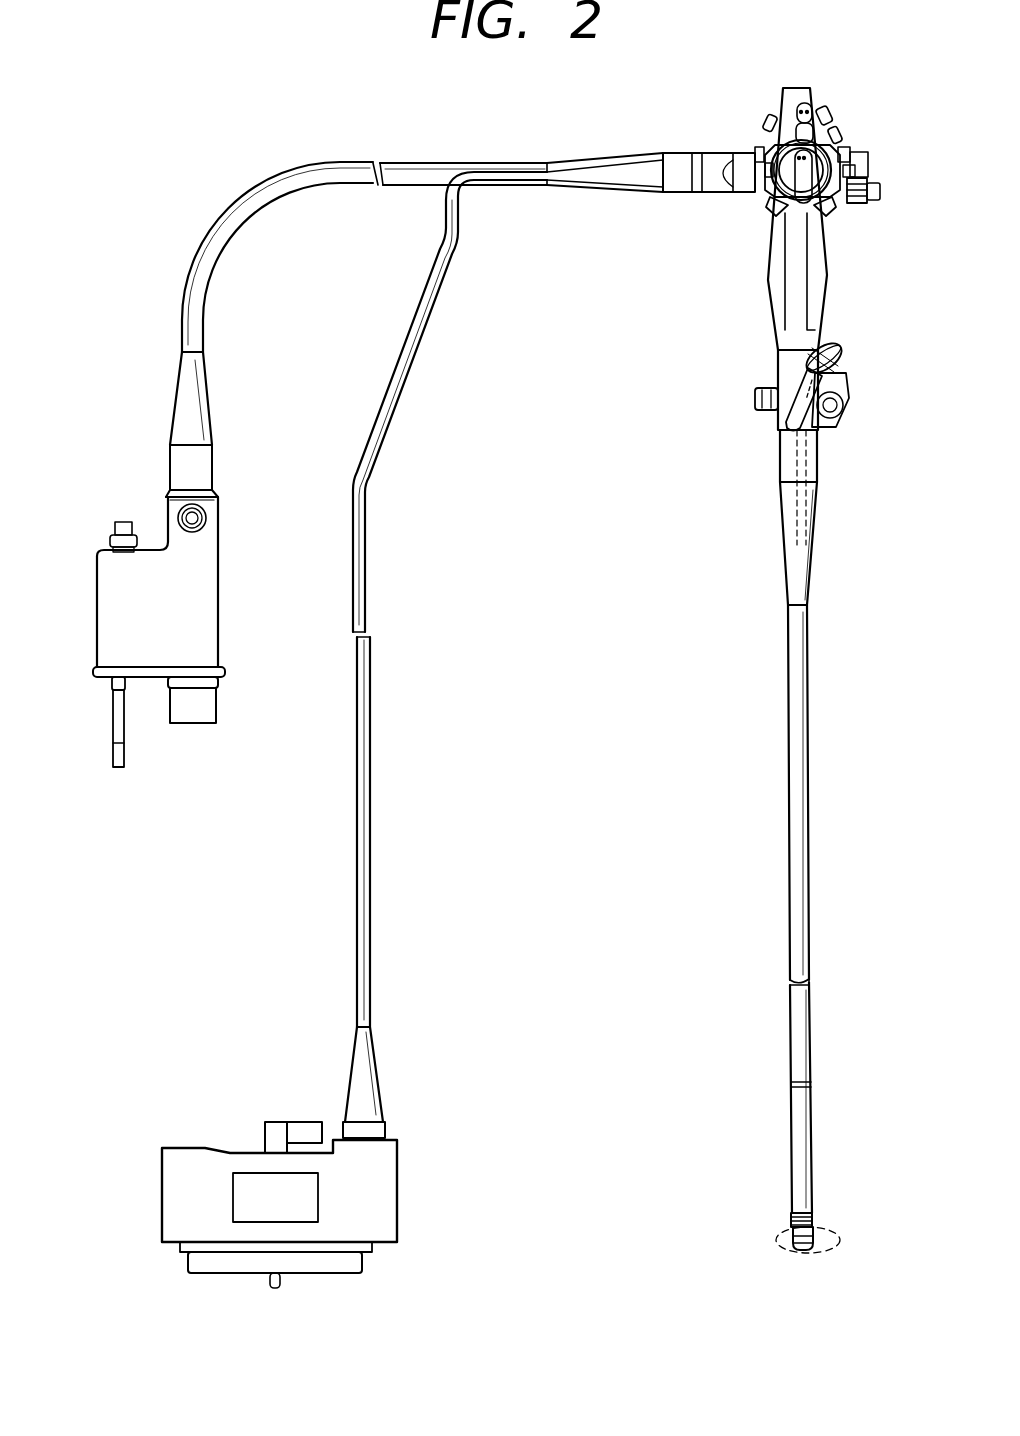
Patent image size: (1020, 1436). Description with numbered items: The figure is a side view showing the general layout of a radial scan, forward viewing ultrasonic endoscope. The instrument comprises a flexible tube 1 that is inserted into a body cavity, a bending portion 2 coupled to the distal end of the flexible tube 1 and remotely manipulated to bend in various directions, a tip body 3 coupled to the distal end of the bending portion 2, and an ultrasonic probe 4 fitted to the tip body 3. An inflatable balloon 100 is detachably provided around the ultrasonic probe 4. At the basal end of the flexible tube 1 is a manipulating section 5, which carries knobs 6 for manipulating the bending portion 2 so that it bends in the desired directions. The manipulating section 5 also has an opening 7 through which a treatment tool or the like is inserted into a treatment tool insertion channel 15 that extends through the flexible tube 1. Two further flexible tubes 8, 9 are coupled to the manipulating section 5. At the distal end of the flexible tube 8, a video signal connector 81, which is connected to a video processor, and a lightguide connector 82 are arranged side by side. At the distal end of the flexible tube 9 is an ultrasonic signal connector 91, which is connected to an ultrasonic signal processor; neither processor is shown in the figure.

The inflatable balloon 100 is at (776, 1243).
The flexible tube 1 is at (787, 781).
The bending portion 2 is at (790, 1133).
The tip body 3 is at (795, 1220).
The ultrasonic probe 4 is at (790, 1242).
The manipulating section 5 is at (777, 305).
The knobs 6 is at (818, 212).
The opening 7 is at (833, 345).
The treatment tool insertion channel 15 is at (785, 510).
The flexible tube 8 is at (210, 262).
The video signal connector 81 is at (196, 725).
The lightguide connector 82 is at (115, 770).
The flexible tube 9 is at (367, 578).
The ultrasonic signal connector 91 is at (325, 1268).